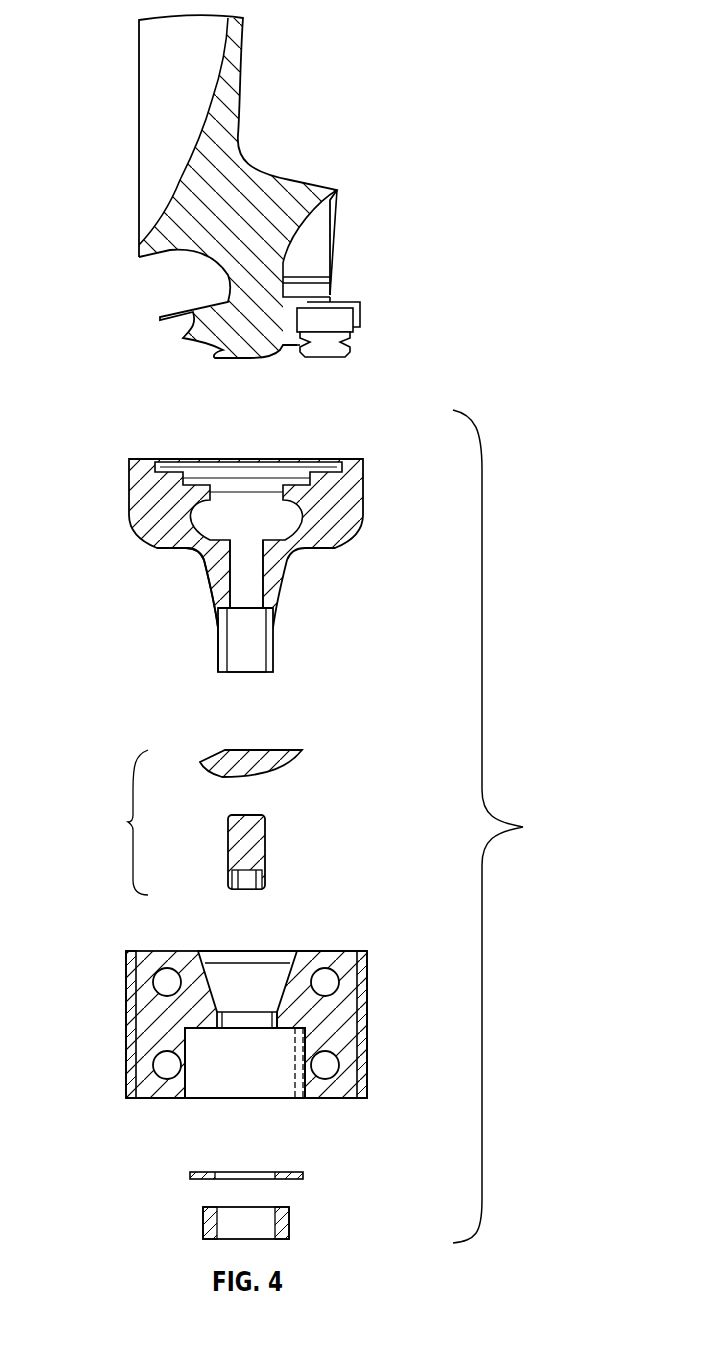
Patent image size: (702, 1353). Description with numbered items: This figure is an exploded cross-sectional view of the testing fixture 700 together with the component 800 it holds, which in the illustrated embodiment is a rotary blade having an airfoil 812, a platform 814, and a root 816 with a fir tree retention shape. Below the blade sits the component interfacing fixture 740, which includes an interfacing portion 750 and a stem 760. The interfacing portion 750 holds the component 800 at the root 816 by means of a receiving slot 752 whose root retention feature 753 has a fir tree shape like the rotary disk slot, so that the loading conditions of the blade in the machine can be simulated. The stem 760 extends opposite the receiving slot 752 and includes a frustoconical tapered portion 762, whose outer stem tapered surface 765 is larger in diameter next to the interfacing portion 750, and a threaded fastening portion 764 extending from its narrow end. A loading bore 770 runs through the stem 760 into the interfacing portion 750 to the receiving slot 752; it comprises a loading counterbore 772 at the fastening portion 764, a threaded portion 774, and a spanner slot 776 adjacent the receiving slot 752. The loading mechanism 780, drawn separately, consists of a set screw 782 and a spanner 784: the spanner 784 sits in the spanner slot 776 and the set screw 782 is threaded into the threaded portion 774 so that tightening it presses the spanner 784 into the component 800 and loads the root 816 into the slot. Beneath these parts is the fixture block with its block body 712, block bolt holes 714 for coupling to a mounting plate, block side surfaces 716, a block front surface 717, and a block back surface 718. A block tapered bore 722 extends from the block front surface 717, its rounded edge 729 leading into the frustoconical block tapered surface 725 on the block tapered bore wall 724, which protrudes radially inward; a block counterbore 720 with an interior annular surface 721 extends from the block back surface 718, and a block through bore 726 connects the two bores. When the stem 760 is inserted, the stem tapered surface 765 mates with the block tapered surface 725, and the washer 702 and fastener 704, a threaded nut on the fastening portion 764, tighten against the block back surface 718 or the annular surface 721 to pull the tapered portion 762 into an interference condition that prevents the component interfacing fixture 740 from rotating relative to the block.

The testing fixture 700 is at (512, 826).
The washer 702 is at (303, 1174).
The fastener 704 is at (289, 1218).
The block body 712 is at (147, 1005).
The block bolt holes 714 is at (328, 1065).
The block side surfaces 716 is at (363, 1017).
The block front surface 717 is at (325, 951).
The block back surface 718 is at (163, 1098).
The block counterbore 720 is at (200, 1083).
The annular surface 721 is at (291, 1030).
The block tapered bore 722 is at (210, 973).
The block tapered bore wall 724 is at (303, 993).
The block tapered surface 725 is at (283, 974).
The block through bore 726 is at (243, 1020).
The edge 729 is at (298, 963).
The component interfacing fixture 740 is at (350, 443).
The interfacing portion 750 is at (352, 486).
The receiving slot 752 is at (268, 472).
The root retention feature 753 is at (175, 478).
The stem 760 is at (218, 628).
The tapered portion 762 is at (205, 553).
The fastening portion 764 is at (218, 655).
The stem tapered surface 765 is at (207, 593).
The loading bore 770 is at (270, 608).
The loading counterbore 772 is at (258, 647).
The threaded portion 774 is at (253, 573).
The spanner slot 776 is at (285, 525).
The loading mechanism 780 is at (118, 822).
The set screw 782 is at (255, 837).
The spanner 784 is at (272, 771).
The component 800 is at (328, 167).
The airfoil 812 is at (155, 95).
The platform 814 is at (335, 302).
The root 816 is at (247, 358).